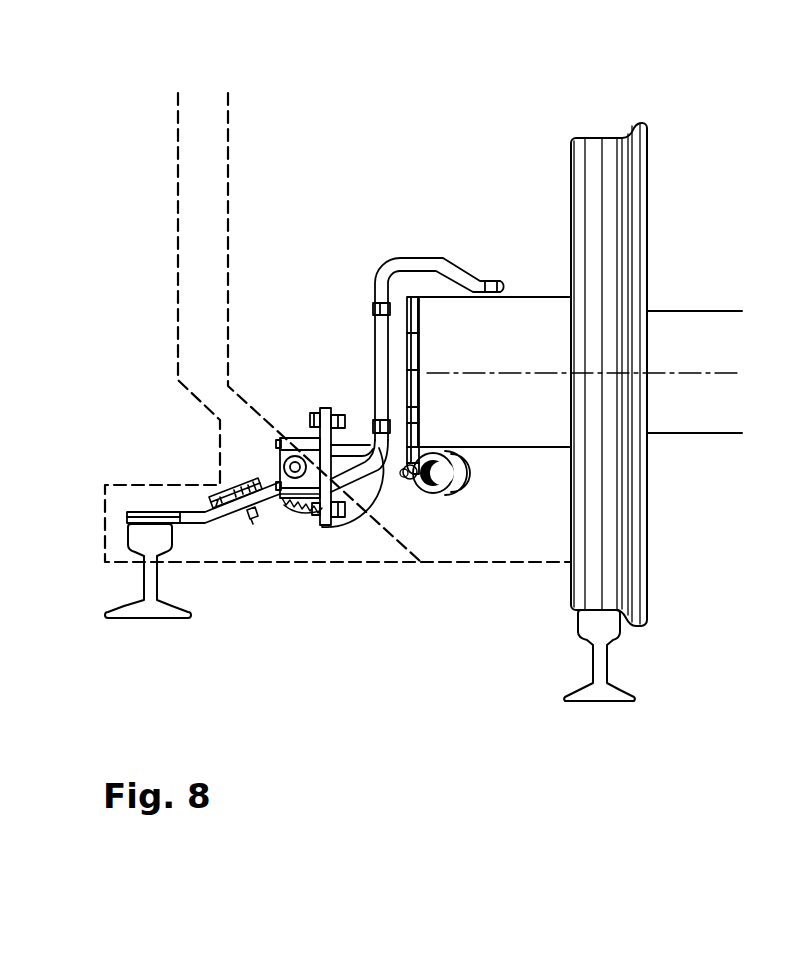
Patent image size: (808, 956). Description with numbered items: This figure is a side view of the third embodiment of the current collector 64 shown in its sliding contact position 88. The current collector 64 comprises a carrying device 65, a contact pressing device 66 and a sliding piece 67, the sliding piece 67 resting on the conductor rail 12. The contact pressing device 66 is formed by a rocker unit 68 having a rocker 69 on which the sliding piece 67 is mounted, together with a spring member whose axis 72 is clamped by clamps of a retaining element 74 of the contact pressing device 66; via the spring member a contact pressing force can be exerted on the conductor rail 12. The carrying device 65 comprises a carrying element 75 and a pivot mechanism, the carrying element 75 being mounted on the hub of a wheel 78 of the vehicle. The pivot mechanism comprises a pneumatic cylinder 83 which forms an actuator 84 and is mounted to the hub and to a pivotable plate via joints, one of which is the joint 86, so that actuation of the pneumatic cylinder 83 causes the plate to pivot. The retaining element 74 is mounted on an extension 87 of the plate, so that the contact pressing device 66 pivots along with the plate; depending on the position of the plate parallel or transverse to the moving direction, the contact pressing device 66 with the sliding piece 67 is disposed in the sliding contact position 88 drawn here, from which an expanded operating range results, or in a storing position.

The conductor rail 12 is at (152, 607).
The current collector 64 is at (406, 291).
The carrying device 65 is at (408, 282).
The contact pressing device 66 is at (248, 387).
The sliding piece 67 is at (143, 518).
The rocker unit 68 is at (237, 471).
The rocker 69 is at (225, 502).
The axis 72 is at (292, 500).
The retaining element 74 is at (296, 422).
The carrying element 75 is at (374, 264).
The wheel 78 is at (614, 156).
The pneumatic cylinder 83 is at (462, 495).
The actuator 84 is at (478, 489).
The joint 86 is at (408, 478).
The extension 87 is at (362, 429).
The sliding contact position 88 is at (225, 325).